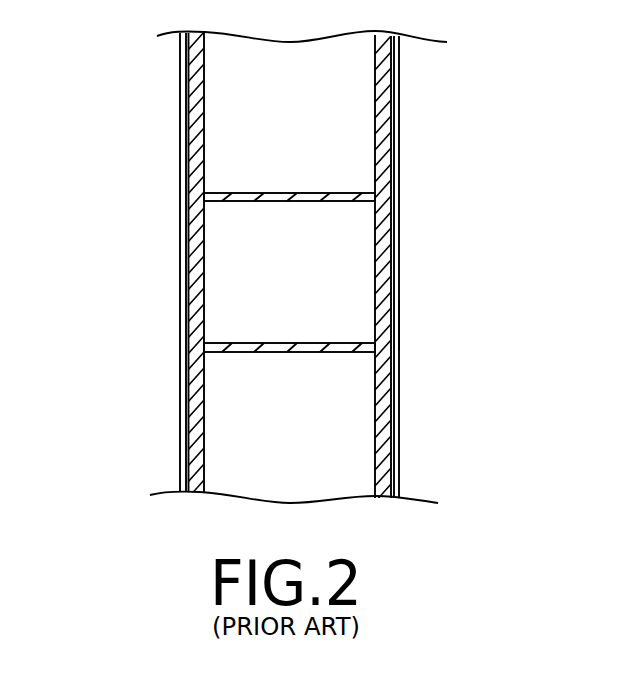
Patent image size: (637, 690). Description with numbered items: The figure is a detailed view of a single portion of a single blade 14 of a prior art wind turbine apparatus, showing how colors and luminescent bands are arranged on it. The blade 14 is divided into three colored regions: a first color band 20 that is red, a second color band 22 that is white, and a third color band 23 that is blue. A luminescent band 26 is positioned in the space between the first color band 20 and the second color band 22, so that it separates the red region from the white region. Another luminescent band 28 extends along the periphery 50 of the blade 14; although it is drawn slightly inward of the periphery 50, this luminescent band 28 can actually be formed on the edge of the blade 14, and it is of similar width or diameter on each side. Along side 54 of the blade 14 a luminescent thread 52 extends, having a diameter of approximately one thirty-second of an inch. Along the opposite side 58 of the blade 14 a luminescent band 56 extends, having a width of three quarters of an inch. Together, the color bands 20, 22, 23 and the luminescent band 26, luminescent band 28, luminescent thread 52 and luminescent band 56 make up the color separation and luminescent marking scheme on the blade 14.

The blade 14 is at (399, 160).
The first color band 20 is at (365, 68).
The second color band 22 is at (362, 257).
The third color band 23 is at (362, 385).
The luminescent band 26 is at (362, 195).
The luminescent band 28 is at (190, 72).
The periphery 50 is at (399, 225).
The luminescent thread 52 is at (375, 325).
The side 54 is at (399, 323).
The luminescent band 56 is at (197, 330).
The side 58 is at (180, 283).